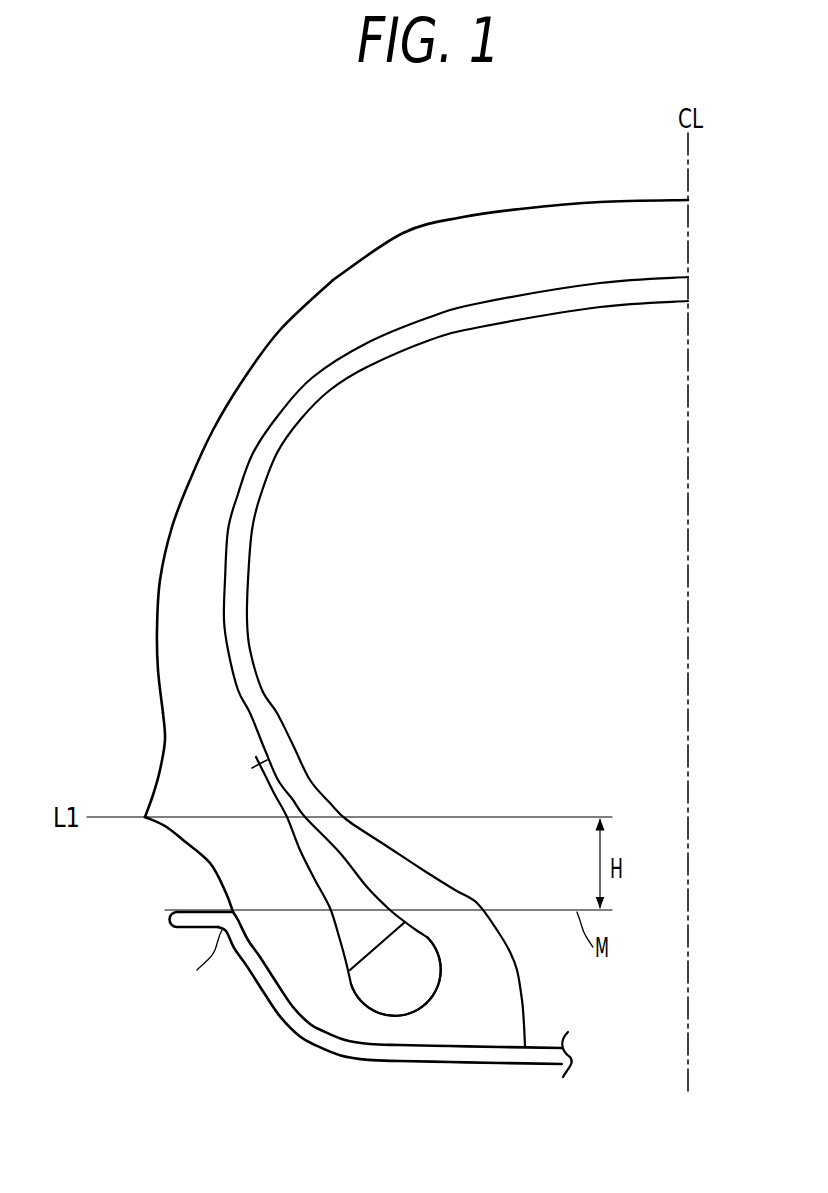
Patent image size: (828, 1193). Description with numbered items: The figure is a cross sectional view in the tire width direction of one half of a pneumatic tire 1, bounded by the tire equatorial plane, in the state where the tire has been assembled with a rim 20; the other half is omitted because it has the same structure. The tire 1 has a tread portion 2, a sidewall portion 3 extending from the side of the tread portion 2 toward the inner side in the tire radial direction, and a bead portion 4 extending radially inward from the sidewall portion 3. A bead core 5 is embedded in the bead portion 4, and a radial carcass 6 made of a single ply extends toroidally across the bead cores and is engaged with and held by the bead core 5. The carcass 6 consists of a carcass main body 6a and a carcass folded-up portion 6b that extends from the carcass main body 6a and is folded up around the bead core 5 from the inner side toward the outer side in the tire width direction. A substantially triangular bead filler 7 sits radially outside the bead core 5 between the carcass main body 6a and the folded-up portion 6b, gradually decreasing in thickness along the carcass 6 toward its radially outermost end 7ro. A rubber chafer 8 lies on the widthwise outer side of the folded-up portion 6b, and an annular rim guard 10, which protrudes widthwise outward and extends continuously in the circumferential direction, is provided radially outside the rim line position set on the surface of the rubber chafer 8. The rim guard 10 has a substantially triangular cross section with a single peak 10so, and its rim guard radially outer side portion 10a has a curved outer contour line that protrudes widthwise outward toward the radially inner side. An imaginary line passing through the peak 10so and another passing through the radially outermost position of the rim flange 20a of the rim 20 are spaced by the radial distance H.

The pneumatic tire 1 is at (341, 215).
The tread portion 2 is at (560, 198).
The sidewall portion 3 is at (171, 458).
The bead portion 4 is at (492, 903).
The bead core 5 is at (417, 967).
The carcass 6 is at (228, 529).
The carcass main body 6a is at (387, 902).
The carcass folded-up portion 6b is at (335, 930).
The bead filler 7 is at (337, 883).
The outermost end in tire radial direction of bead filler 7ro is at (266, 760).
The rubber chafer 8 is at (230, 850).
The rim guard 10 is at (188, 830).
The rim guard radially outer side portion 10a is at (158, 752).
The peak of rim guard 10so is at (147, 818).
The rim 20 is at (428, 1065).
The rim flange 20a is at (248, 960).